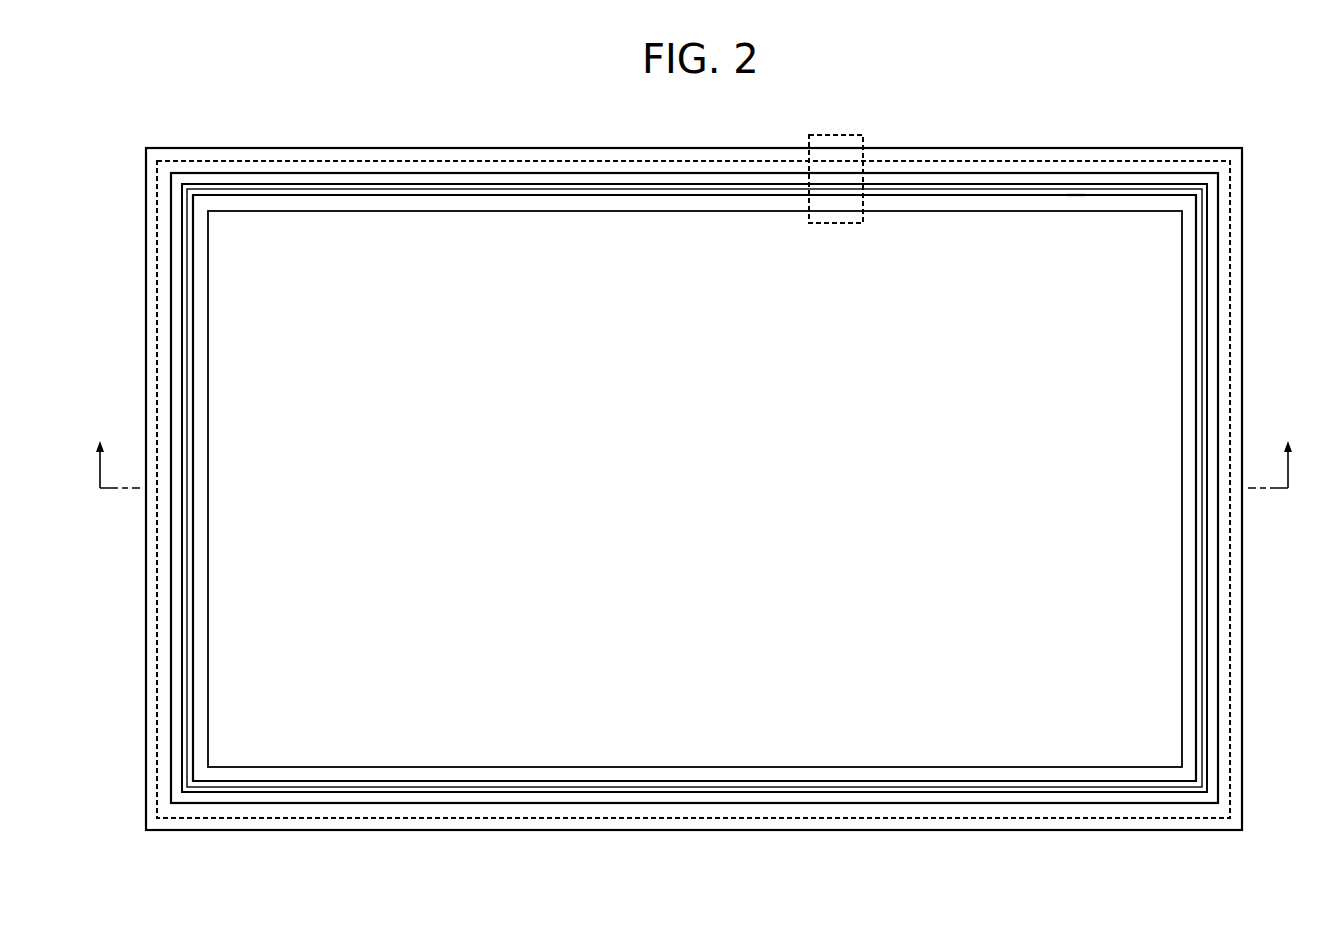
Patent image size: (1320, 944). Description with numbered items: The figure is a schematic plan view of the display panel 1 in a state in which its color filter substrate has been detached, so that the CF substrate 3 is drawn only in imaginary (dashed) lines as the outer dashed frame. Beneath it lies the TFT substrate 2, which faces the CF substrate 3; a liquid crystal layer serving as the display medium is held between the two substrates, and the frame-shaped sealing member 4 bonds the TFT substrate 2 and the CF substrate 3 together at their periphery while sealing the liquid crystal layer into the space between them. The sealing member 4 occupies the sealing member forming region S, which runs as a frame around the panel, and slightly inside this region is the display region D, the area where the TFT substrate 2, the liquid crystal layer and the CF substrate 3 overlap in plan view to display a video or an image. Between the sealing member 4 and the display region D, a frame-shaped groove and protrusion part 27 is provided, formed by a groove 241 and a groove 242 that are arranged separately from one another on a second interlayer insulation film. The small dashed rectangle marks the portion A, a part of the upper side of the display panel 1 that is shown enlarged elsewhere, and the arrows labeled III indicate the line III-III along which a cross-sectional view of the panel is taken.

The display panel 1 is at (694, 486).
The TFT substrate 2 is at (1227, 238).
The CF substrate 3 is at (1122, 157).
The sealing member 4 is at (1215, 298).
The groove and protrusion part 27 is at (1076, 194).
The groove 241 is at (884, 188).
The groove 242 is at (962, 196).
The portion A is at (832, 133).
The display region D is at (1027, 226).
The sealing member forming region S is at (1215, 363).
The line III- III is at (92, 413).